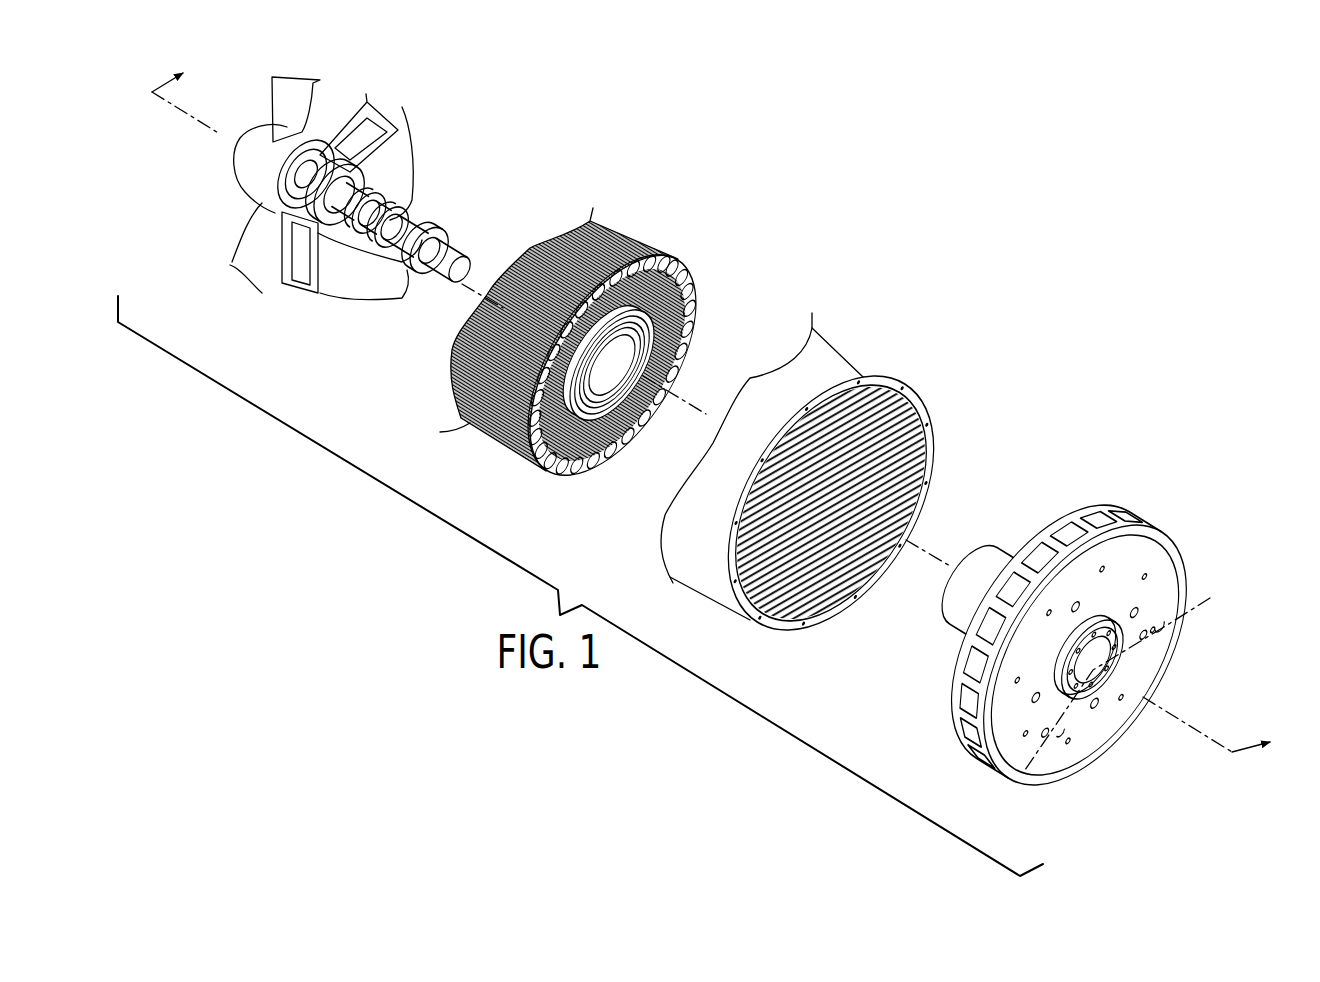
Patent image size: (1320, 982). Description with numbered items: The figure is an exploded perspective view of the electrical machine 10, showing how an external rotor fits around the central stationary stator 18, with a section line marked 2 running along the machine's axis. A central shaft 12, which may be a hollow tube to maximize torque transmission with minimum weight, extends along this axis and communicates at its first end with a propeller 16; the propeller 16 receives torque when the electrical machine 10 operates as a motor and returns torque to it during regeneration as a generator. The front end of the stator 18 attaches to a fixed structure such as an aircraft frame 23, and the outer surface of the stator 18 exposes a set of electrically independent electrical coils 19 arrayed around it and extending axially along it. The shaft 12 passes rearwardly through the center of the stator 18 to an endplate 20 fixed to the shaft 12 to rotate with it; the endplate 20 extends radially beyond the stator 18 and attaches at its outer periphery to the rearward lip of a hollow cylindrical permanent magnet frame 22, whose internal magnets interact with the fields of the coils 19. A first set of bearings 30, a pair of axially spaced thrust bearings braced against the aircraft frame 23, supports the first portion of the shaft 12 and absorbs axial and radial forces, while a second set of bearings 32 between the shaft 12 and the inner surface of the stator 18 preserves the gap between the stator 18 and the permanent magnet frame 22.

The section line 2- 2 is at (711, 400).
The electrical machine 10 is at (1099, 645).
The central shaft 12 is at (452, 260).
The propeller 16 is at (243, 146).
The stator 18 is at (595, 337).
The electrical coils 19 is at (440, 433).
The endplate 20 is at (1069, 645).
The permanent magnet frame 22 is at (818, 489).
The aircraft frame 23 is at (340, 137).
The first set of bearings 30 is at (313, 195).
The second set of bearings 32 is at (410, 277).